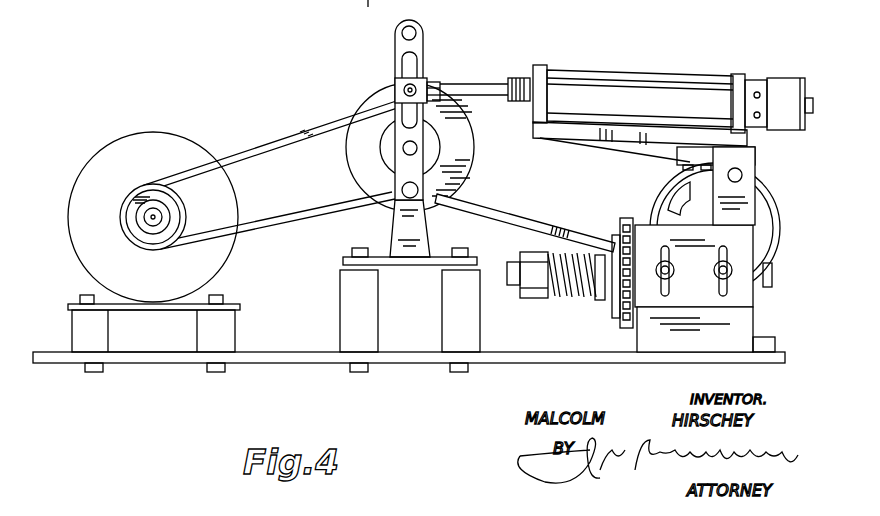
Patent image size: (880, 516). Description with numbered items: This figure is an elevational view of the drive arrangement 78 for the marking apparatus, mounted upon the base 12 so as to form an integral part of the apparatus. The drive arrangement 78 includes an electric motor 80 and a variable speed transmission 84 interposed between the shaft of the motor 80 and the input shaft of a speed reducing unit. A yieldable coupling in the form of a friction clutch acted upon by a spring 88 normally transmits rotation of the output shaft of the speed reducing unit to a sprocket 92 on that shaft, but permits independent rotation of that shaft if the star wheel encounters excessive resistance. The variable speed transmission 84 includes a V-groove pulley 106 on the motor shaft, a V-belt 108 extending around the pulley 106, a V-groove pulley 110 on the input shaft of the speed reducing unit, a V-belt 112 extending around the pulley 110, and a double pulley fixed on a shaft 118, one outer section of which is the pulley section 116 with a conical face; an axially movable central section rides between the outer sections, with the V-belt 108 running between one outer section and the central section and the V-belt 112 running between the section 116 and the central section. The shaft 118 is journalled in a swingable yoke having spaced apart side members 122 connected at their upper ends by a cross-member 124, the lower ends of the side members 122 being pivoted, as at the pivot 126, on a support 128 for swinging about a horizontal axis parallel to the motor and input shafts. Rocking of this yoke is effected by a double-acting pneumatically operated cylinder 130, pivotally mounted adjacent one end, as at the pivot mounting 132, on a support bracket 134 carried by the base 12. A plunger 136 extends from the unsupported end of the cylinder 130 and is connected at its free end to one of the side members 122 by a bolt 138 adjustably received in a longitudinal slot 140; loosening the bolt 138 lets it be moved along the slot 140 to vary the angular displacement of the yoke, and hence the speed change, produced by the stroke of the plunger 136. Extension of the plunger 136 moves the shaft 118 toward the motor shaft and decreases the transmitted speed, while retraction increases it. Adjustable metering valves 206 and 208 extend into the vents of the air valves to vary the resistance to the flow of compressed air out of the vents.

The base 12 is at (287, 363).
The drive arrangement 78 is at (500, 47).
The electric motor 80 is at (172, 136).
The variable speed transmission 84 is at (355, 97).
The spring 88 is at (570, 298).
The sprocket 92 is at (614, 324).
The V-groove pulley 106 is at (120, 222).
The V-belt 108 is at (270, 229).
The V-groove pulley 110 is at (655, 190).
The V-belt 112 is at (498, 213).
The pulley section 116 is at (352, 168).
The shaft 118 is at (418, 148).
The side members 122 is at (424, 48).
The cross-member 124 is at (417, 32).
The pivot 126 is at (395, 205).
The support 128 is at (394, 265).
The pneumatically operated cylinder 130 is at (606, 80).
The pivot mounting 132 is at (742, 175).
The support bracket 134 is at (748, 302).
The plunger 136 is at (470, 84).
The bolt 138 is at (395, 88).
The longitudinal slot 140 is at (402, 62).
The adjustable metering valve 206 is at (757, 91).
The adjustable metering valve 208 is at (757, 119).